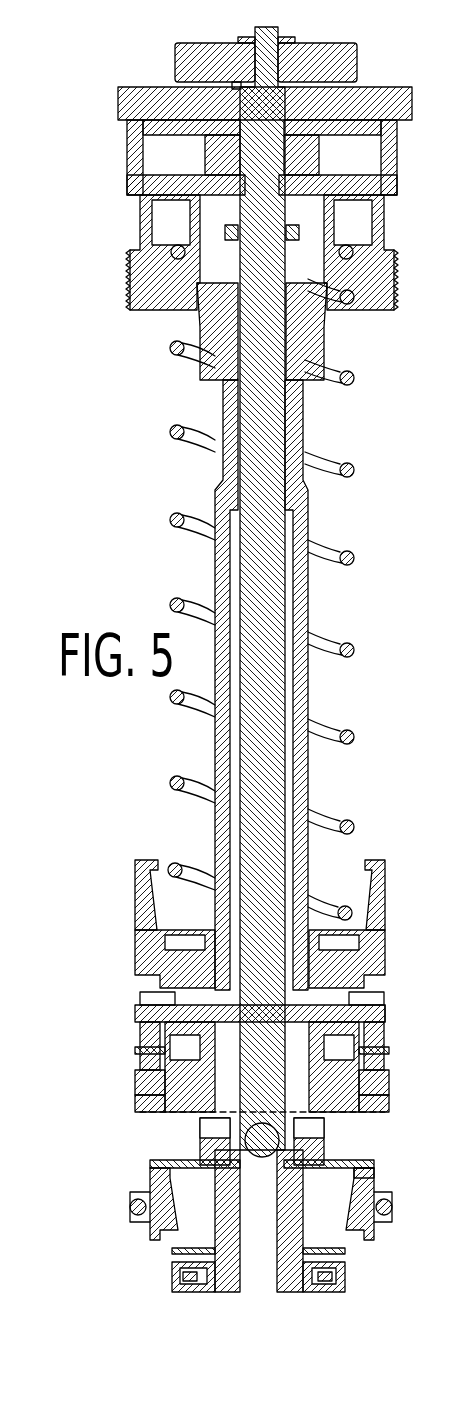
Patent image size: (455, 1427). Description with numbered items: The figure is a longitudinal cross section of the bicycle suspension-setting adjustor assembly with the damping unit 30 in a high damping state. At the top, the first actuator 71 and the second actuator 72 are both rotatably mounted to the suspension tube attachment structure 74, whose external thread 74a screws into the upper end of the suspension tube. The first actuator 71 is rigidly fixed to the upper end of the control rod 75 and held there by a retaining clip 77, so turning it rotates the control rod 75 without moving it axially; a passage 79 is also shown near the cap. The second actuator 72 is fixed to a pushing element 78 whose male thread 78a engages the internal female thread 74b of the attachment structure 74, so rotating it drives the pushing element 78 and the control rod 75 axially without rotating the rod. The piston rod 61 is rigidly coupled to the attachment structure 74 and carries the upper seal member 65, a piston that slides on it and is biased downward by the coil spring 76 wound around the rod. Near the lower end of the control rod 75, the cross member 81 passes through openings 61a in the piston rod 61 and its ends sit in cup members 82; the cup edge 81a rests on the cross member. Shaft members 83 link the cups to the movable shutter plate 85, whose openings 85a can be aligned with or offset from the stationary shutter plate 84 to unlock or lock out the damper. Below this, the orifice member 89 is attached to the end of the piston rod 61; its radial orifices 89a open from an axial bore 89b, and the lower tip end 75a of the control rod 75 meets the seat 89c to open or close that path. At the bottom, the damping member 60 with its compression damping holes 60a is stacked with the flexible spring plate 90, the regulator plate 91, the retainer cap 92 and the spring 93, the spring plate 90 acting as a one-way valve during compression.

The damping unit 30 is at (118, 1207).
The damping member 60 is at (370, 1183).
The compression damping holes 60a is at (150, 1239).
The piston rod 61 is at (312, 684).
The openings 61a is at (335, 990).
The upper seal member 65 is at (135, 905).
The first actuator 71 is at (357, 67).
The second actuator 72 is at (412, 110).
The suspension tube attachment structure 74 is at (140, 232).
The external thread 74a is at (127, 282).
The internal female thread 74b is at (288, 280).
The control rod 75 is at (246, 404).
The lower tip end 75a is at (300, 1182).
The spring 76 is at (335, 546).
The retaining clip 77 is at (247, 38).
The pushing element 78 is at (300, 232).
The male thread 78a is at (238, 232).
The passage 79 is at (236, 86).
The cross member 81 is at (135, 1010).
The plate edge 81a is at (385, 999).
The cup members 82 is at (140, 1036).
The shaft members 83 is at (140, 1059).
The stationary shutter plate 84 is at (137, 1074).
The movable shutter plate 85 is at (375, 1113).
The openings 85a is at (165, 1123).
The orifice member 89 is at (207, 1143).
The orifices 89a is at (210, 1129).
The bore 89b is at (172, 1251).
The seat 89c is at (312, 1129).
The flexible spring plate 90 is at (363, 1176).
The regulator plate 91 is at (175, 1269).
The retainer cap 92 is at (345, 1291).
The spring 93 is at (335, 1263).